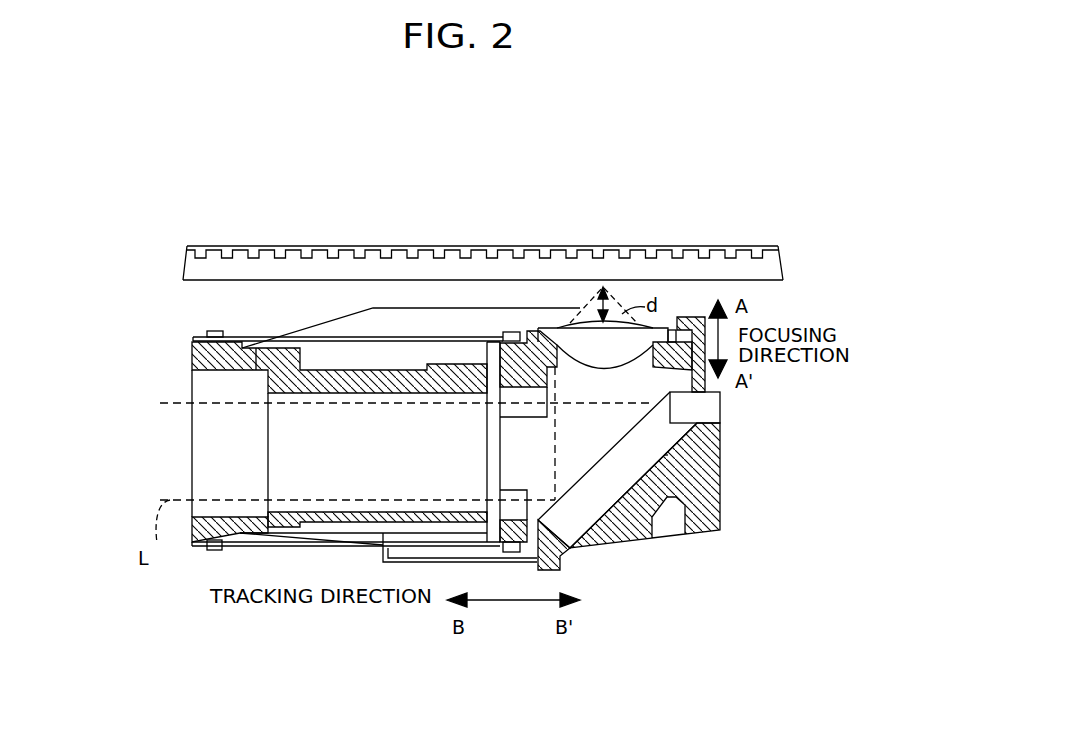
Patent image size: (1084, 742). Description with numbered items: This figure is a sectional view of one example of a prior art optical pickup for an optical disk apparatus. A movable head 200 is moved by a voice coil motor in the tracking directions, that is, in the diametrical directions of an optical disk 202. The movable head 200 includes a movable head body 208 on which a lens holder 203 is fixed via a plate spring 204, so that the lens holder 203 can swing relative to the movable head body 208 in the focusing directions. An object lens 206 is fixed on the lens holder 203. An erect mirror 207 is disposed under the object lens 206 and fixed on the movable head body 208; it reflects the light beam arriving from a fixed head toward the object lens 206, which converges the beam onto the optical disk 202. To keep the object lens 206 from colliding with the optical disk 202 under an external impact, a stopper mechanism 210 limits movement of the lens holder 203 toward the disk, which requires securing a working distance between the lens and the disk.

The movable head 200 is at (617, 573).
The optical disk 202 is at (383, 236).
The lens holder 203 is at (517, 333).
The plate spring 204 is at (343, 342).
The object lens 206 is at (625, 327).
The erect mirror 207 is at (617, 477).
The movable head body 208 is at (722, 488).
The stopper mechanism 210 is at (705, 373).